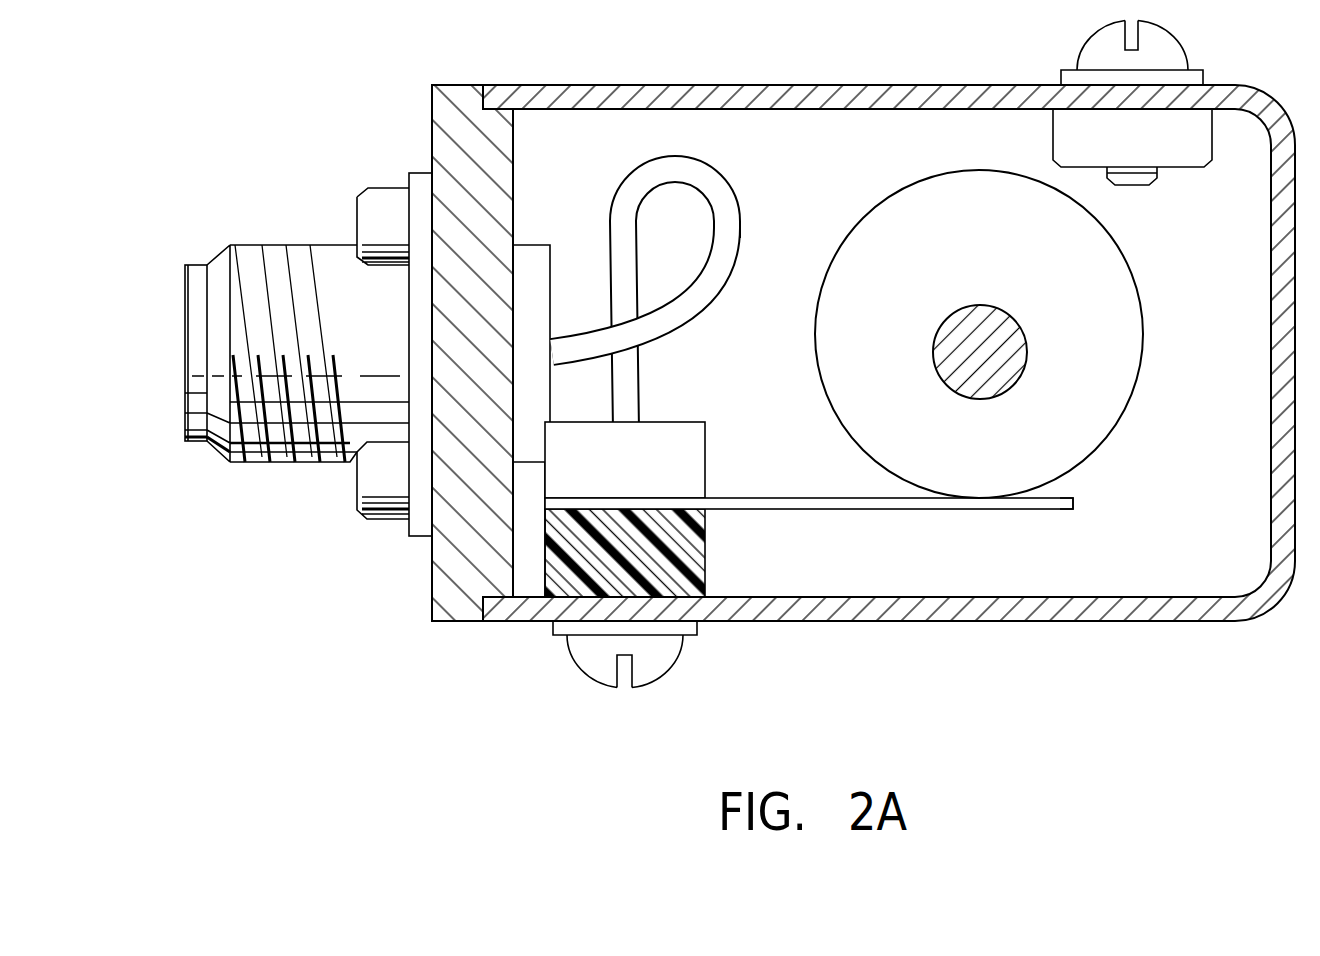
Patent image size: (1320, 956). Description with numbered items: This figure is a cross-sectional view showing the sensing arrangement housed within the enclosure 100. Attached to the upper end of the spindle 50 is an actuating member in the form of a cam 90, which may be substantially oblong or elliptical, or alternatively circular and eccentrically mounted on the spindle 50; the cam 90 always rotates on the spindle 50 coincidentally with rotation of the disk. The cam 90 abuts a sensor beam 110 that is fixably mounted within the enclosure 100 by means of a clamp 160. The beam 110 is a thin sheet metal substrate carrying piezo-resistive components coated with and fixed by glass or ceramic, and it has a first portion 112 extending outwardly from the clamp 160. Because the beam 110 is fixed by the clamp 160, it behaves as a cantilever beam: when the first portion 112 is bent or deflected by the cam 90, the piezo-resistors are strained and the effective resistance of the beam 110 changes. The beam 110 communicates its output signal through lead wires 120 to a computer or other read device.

The enclosure 100 is at (527, 85).
The lead wires 120 is at (627, 178).
The cam 90 is at (1003, 231).
The spindle 50 is at (1024, 372).
The sensor beam 110 is at (916, 536).
The first portion 112 is at (1050, 511).
The clamp 160 is at (729, 528).